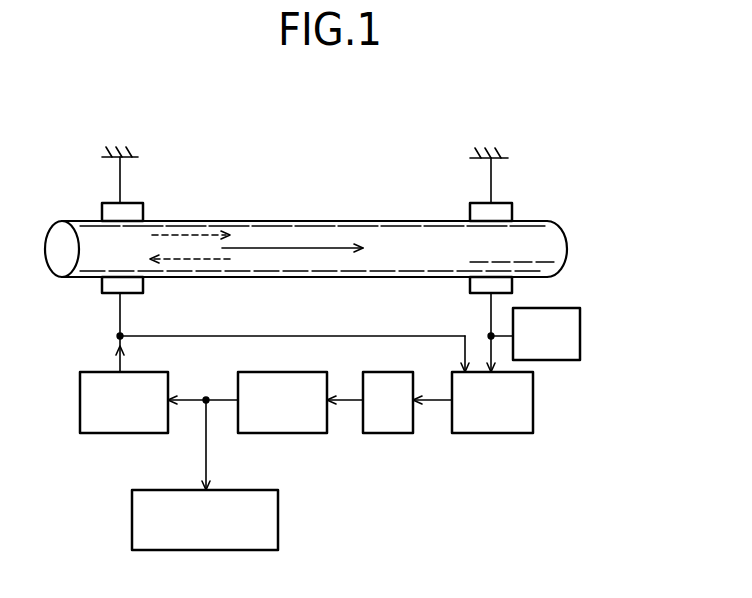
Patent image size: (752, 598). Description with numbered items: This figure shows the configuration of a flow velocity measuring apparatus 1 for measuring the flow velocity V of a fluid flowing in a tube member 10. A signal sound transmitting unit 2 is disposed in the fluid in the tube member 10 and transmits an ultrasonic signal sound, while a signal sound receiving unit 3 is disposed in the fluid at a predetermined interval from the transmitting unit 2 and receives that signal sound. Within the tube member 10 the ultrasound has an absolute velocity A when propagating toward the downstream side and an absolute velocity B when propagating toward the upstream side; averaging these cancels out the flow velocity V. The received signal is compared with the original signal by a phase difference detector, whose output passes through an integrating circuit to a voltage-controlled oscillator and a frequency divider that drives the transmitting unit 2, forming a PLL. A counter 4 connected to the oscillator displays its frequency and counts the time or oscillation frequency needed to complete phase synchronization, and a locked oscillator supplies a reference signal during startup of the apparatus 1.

The flow velocity measuring apparatus 1 is at (615, 373).
The signal sound transmitting unit 2 is at (100, 280).
The signal sound receiving unit 3 is at (512, 292).
The counter 4 is at (280, 522).
The tube member 10 is at (533, 220).
The absolute velocity A is at (183, 230).
The absolute velocity B is at (203, 263).
The flow velocity V is at (281, 246).